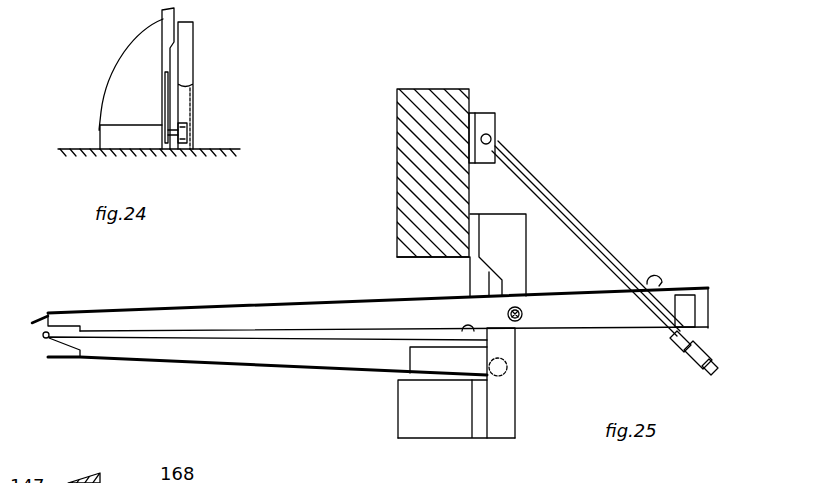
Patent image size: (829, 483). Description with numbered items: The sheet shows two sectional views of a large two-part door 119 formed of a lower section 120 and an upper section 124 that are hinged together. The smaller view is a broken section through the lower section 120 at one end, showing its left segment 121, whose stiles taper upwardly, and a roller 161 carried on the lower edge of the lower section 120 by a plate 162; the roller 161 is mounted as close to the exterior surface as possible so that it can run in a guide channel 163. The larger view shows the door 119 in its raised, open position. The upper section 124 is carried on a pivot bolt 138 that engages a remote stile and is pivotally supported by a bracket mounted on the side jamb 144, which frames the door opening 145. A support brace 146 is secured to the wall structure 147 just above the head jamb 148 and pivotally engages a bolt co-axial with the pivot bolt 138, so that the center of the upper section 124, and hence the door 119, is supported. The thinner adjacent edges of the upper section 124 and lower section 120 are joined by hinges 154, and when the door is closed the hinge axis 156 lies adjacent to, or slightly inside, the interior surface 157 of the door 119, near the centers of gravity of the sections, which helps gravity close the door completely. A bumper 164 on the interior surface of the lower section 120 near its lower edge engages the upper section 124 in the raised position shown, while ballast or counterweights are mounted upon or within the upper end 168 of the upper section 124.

In FIG. 24, the left segment 121 is at (143, 53).
In FIG. 24, the guide channel 163 is at (185, 50).
In FIG. 25, the guide channel 163 is at (508, 403).
In FIG. 24, the plate 162 is at (165, 97).
In FIG. 25, the plate 162 is at (420, 375).
In FIG. 24, the roller 161 is at (187, 123).
In FIG. 25, the roller 161 is at (508, 364).
In FIG. 25, the wall structure 147 is at (408, 178).
In FIG. 25, the head jamb 148 is at (398, 250).
In FIG. 25, the support brace 146 is at (510, 226).
In FIG. 25, the door 119 is at (592, 286).
In FIG. 25, the upper end 168 is at (705, 313).
In FIG. 25, the upper section 124 is at (330, 302).
In FIG. 25, the interior surface 157 is at (623, 323).
In FIG. 25, the hinge axis 156 is at (41, 346).
In FIG. 25, the hinge 154 is at (46, 342).
In FIG. 25, the lower section 120 is at (322, 360).
In FIG. 25, the bumper 164 is at (462, 329).
In FIG. 25, the pivot bolt 138 is at (522, 319).
In FIG. 25, the side jamb 144 is at (398, 422).
In FIG. 25, the door opening 145 is at (443, 428).